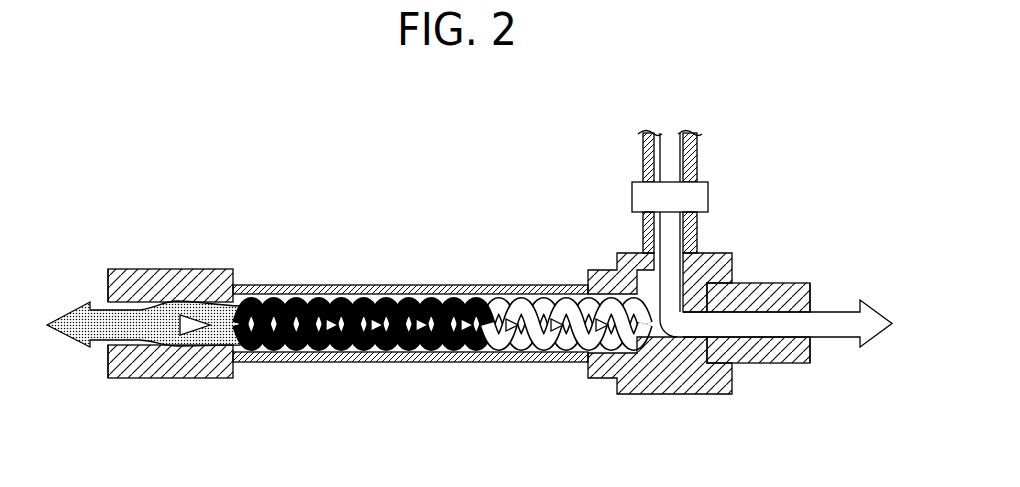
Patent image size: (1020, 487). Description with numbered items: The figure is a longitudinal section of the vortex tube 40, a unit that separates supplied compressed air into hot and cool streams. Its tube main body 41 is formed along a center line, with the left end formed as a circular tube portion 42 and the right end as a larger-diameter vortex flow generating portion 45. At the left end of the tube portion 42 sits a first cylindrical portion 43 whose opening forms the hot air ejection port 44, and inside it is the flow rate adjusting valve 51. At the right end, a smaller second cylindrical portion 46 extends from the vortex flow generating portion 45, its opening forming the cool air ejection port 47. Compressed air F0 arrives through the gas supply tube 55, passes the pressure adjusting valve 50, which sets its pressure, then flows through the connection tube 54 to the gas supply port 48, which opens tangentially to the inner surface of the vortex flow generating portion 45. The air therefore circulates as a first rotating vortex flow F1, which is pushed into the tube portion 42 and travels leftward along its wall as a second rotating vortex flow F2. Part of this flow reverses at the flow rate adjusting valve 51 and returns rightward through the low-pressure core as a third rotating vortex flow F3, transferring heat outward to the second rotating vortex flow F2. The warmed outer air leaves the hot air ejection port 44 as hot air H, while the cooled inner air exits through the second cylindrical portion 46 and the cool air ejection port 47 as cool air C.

The vortex tube 40 is at (783, 144).
The tube main body 41 is at (466, 374).
The tube portion 42 is at (358, 352).
The first cylindrical portion 43 is at (192, 362).
The hot air ejection port 44 is at (108, 340).
The vortex flow generating portion 45 is at (678, 380).
The second cylindrical portion 46 is at (780, 352).
The cool air ejection port 47 is at (812, 340).
The gas supply port 48 is at (650, 240).
The pressure adjusting valve 50 is at (700, 198).
The flow rate adjusting valve 51 is at (195, 318).
The connection tube 54 is at (694, 234).
The gas supply tube 55 is at (696, 148).
The hot air H is at (72, 312).
The cool air C is at (878, 318).
The compressed air F0 is at (668, 160).
The first rotating vortex flow F1 is at (655, 345).
The second rotating vortex flow F2 is at (438, 352).
The third rotating vortex flow F3 is at (521, 316).